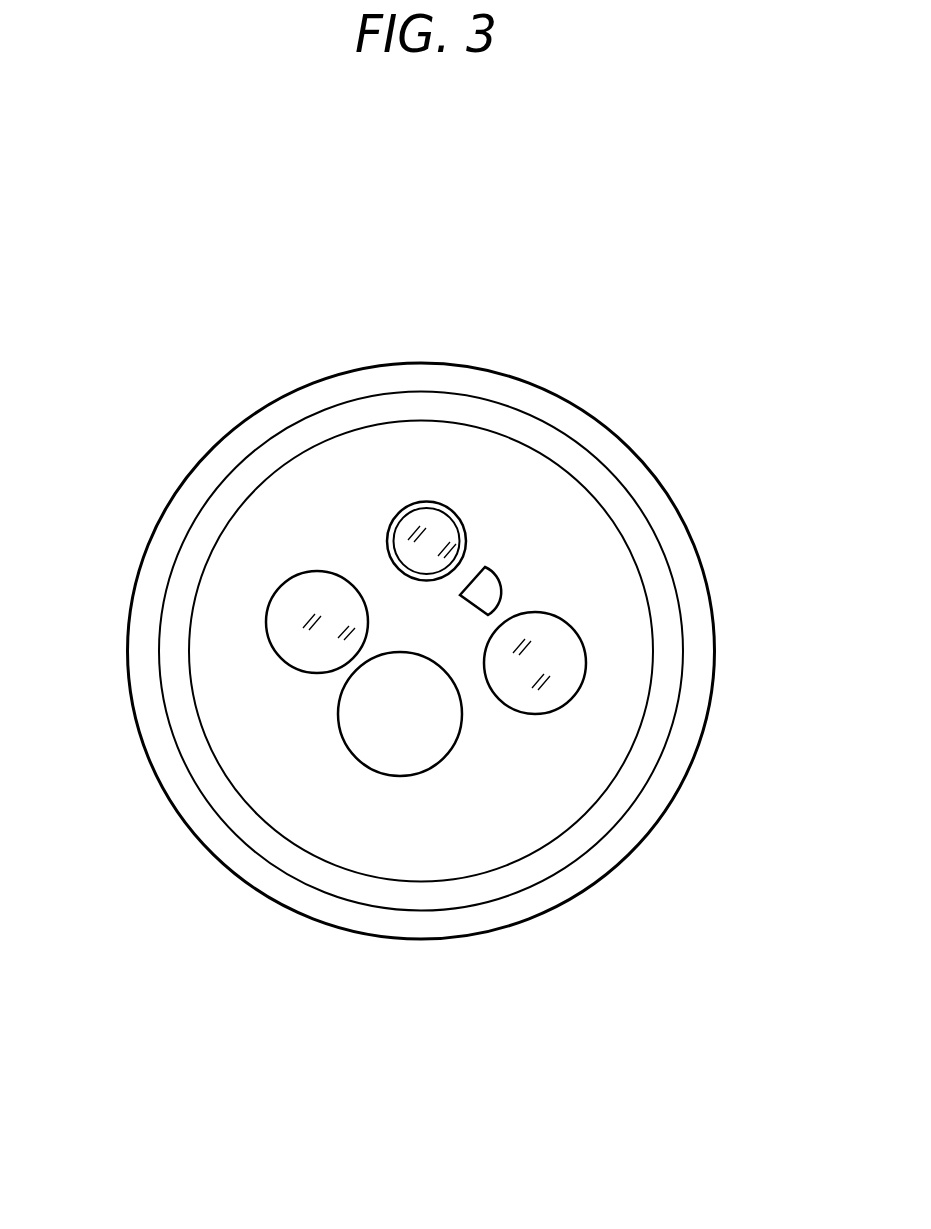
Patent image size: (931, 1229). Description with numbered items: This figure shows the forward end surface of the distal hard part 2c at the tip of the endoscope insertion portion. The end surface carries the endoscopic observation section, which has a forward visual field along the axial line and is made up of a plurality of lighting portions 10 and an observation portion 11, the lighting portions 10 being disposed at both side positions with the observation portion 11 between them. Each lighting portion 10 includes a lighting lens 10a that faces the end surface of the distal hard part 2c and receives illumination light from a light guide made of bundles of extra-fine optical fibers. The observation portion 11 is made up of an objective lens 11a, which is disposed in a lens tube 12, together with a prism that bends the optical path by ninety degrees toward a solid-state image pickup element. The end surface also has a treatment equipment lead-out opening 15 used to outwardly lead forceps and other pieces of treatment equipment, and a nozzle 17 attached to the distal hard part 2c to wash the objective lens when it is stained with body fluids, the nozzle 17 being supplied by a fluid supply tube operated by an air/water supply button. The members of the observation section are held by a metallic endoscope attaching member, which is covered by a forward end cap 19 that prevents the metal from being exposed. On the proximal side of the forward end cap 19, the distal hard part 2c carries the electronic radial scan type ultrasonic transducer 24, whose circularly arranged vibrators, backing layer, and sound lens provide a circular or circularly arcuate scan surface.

The distal hard part 2c is at (372, 363).
The lighting portion 10 is at (276, 656).
The lighting lens 10a is at (283, 622).
The observation portion 11 is at (448, 501).
The objective lens 11a is at (465, 528).
The lens tube 12 is at (388, 535).
The treatment equipment lead-out opening 15 is at (425, 718).
The nozzle 17 is at (500, 593).
The forward end cap 19 is at (310, 790).
The ultrasonic transducer 24 is at (508, 910).